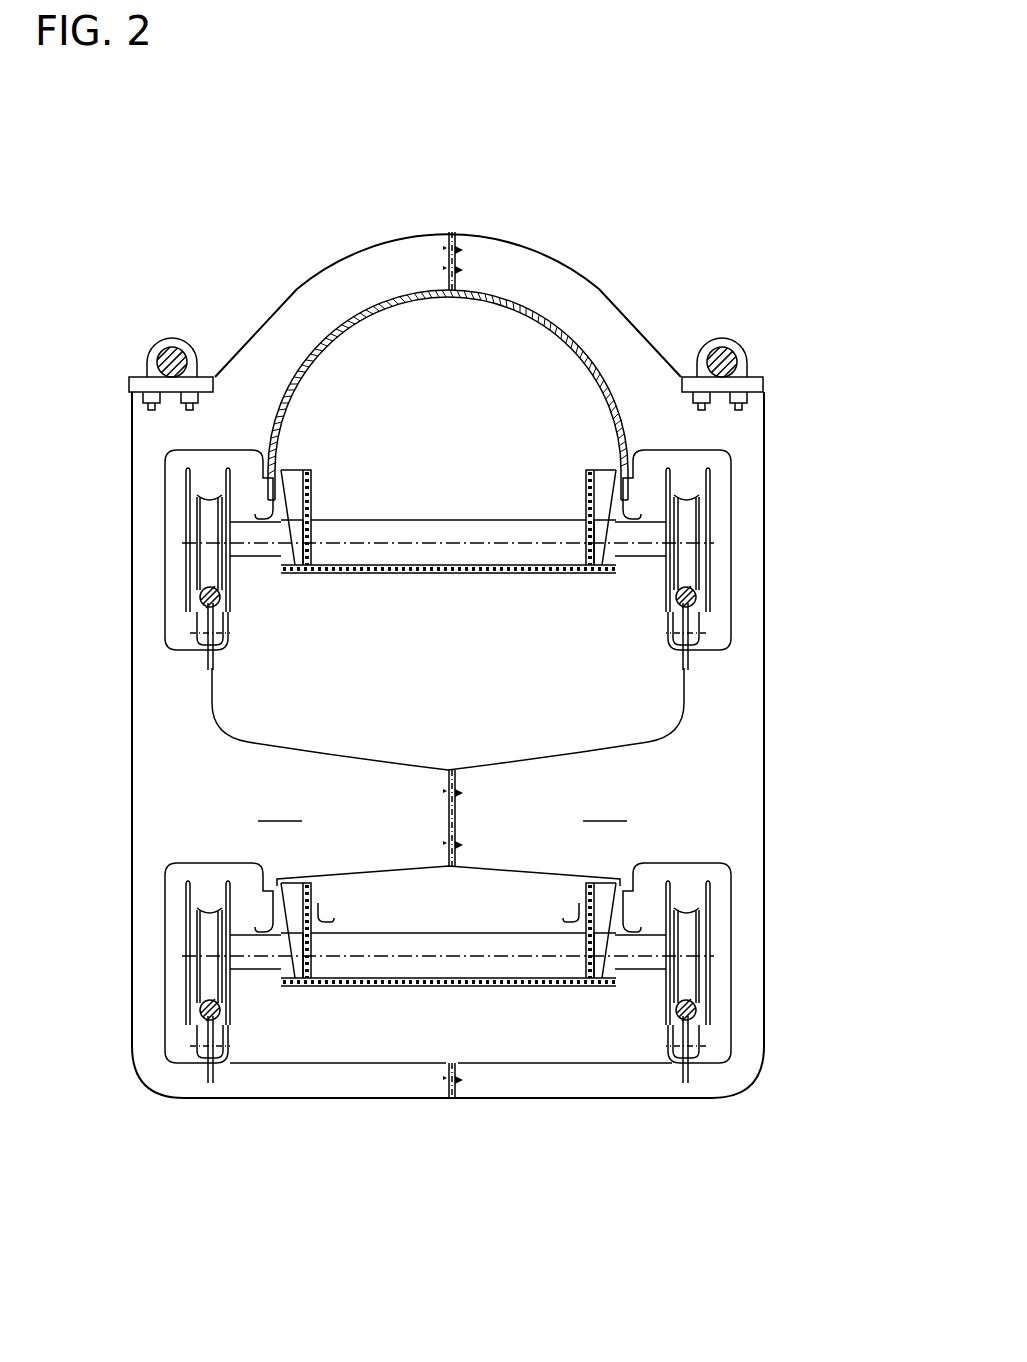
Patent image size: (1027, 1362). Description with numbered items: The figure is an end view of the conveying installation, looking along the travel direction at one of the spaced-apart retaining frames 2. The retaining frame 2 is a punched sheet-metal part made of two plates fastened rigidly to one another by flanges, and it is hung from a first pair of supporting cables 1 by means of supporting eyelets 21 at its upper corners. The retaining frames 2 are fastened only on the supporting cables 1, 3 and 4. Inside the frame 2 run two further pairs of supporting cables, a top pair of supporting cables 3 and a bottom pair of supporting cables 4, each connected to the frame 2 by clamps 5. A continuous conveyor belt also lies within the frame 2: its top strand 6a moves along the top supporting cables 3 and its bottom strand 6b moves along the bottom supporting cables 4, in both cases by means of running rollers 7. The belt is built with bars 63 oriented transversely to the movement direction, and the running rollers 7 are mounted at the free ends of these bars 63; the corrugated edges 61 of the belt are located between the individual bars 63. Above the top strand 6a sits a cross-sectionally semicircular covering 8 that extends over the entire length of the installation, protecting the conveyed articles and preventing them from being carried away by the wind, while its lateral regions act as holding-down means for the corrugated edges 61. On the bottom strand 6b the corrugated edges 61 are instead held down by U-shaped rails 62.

The supporting cables 1 is at (167, 334).
The retaining frame 2 is at (118, 738).
The supporting eyelet 21 is at (145, 357).
The supporting cables 3 is at (200, 595).
The supporting cables 4 is at (198, 1009).
The clamp 5 is at (198, 624).
The top strand 6a is at (498, 578).
The bottom strand 6b is at (380, 987).
The corrugated edge 61 is at (304, 474).
The U-shaped rail 62 is at (275, 906).
The bar 63 is at (424, 532).
The running roller 7 is at (212, 522).
The covering 8 is at (553, 320).